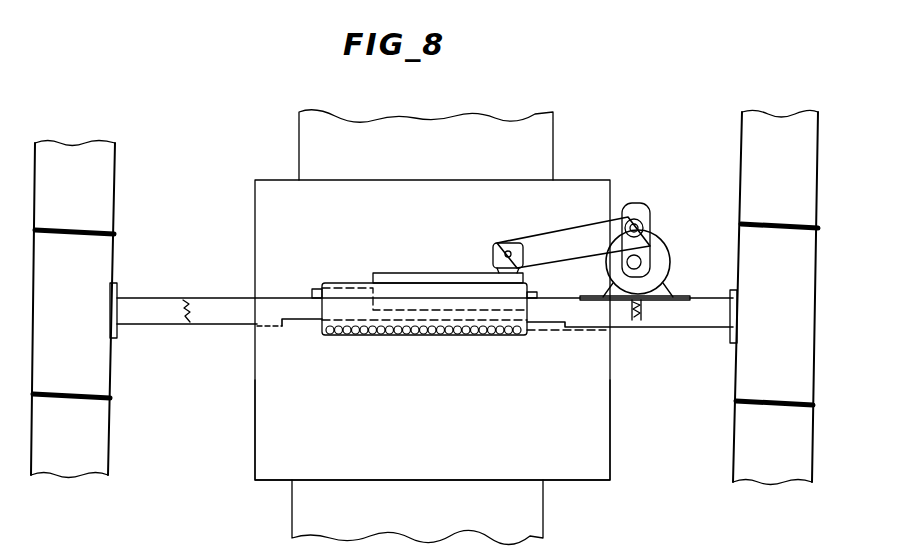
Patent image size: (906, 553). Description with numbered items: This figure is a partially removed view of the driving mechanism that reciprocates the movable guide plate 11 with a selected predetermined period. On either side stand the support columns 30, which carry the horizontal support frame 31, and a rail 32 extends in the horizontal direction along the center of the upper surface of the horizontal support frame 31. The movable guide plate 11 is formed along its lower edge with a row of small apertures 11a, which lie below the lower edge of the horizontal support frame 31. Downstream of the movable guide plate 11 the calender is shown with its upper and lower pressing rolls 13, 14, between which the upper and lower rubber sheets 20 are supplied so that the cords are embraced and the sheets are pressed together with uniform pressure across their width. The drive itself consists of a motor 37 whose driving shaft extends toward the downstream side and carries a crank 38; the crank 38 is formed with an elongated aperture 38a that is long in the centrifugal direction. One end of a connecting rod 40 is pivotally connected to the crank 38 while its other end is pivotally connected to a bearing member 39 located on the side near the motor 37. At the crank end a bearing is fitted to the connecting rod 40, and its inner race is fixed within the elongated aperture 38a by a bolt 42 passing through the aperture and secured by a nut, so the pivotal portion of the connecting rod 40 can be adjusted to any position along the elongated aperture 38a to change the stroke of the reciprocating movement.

The support column 30 is at (117, 190).
The upper pressing roll 13 is at (256, 180).
The rubber sheet 20 is at (555, 133).
The lower pressing roll 14 is at (255, 450).
The movable guide plate 11 is at (537, 313).
The small apertures 11a is at (427, 337).
The rail 32 is at (322, 284).
The bearing member 39 is at (525, 262).
The connecting rod 40 is at (572, 226).
The elongated aperture 38a is at (633, 200).
The motor 37 is at (655, 251).
The bolt 42 is at (645, 222).
The crank 38 is at (648, 263).
The horizontal support frame 31 is at (643, 330).